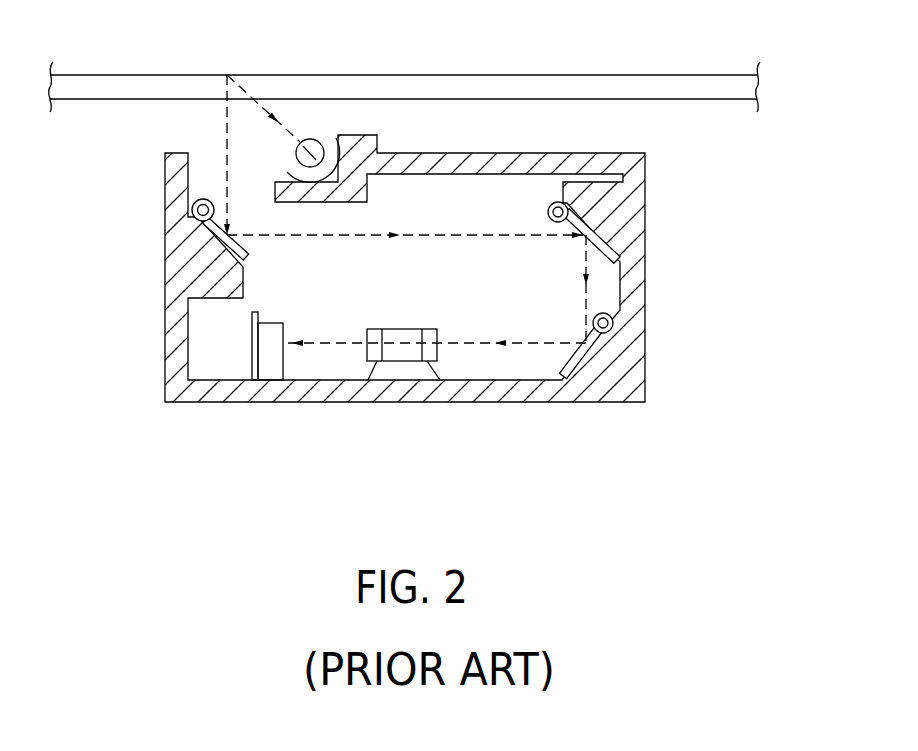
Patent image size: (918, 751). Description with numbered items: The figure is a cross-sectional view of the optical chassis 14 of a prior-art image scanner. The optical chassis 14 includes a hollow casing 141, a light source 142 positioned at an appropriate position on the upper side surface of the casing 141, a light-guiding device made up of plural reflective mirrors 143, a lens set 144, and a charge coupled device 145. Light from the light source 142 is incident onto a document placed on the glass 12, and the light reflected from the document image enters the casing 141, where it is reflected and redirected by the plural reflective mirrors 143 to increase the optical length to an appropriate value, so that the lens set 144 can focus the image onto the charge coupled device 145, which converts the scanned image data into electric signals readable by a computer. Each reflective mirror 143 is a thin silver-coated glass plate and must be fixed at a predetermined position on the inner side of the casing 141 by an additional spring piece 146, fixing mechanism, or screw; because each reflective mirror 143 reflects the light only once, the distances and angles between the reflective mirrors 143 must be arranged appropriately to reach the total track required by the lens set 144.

The glass 12 is at (438, 82).
The optical chassis 14 is at (124, 312).
The hollow casing 141 is at (170, 368).
The light source 142 is at (313, 138).
The reflective mirror 143 is at (222, 232).
The lens set 144 is at (396, 352).
The charge coupled device 145 is at (273, 363).
The spring piece 146 is at (206, 199).